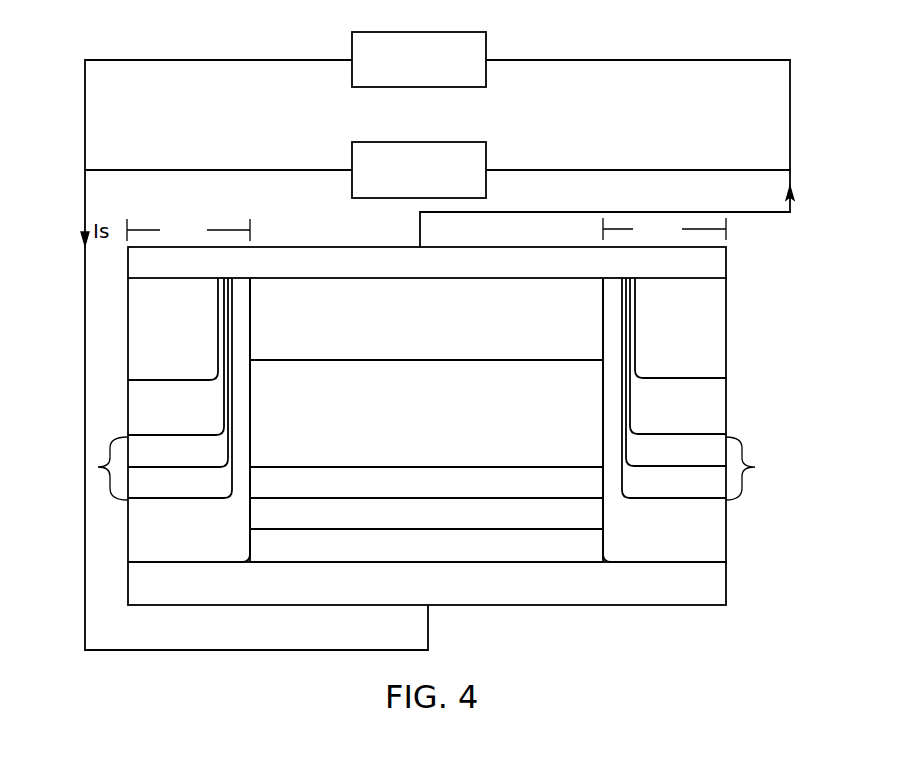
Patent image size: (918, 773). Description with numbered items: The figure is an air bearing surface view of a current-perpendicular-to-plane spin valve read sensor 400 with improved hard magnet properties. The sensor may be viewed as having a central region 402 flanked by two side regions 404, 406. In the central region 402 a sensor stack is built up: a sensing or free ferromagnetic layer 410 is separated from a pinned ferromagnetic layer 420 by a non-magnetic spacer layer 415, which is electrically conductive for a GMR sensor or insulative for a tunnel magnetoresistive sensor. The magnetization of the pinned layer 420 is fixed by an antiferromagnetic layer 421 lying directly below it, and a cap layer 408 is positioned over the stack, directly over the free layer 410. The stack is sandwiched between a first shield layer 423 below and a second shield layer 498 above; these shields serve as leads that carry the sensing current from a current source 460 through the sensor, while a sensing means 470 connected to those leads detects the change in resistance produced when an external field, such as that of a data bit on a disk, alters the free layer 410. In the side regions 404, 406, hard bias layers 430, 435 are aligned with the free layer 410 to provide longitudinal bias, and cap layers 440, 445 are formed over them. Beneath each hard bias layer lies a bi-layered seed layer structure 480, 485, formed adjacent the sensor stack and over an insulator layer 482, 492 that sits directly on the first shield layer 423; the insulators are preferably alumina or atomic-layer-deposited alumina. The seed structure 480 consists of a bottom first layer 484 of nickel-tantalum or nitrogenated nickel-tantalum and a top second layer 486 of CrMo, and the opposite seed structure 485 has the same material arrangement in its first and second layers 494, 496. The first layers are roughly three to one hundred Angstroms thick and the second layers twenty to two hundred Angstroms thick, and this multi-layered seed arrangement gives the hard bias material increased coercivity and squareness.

The spin valve sensor 400 is at (420, 473).
The central region 402 is at (393, 226).
The side region 404 is at (188, 230).
The side region 406 is at (664, 229).
The cap layer 408 is at (505, 353).
The sensing layer 410 is at (500, 425).
The spacer layer 415 is at (532, 492).
The pinned layer 420 is at (532, 523).
The antiferromagnetic layer 421 is at (509, 554).
The first shield layer 423 is at (540, 597).
The shield layer 498 is at (538, 273).
The hard bias layer 430 is at (137, 405).
The hard bias layer 435 is at (713, 413).
The cap layer 440 is at (157, 335).
The cap layer 445 is at (661, 333).
The current source 460 is at (486, 155).
The sensing means 470 is at (486, 47).
The multi-layered seed layer structure 480 is at (85, 461).
The insulator layer 482 is at (138, 552).
The first layer 484 is at (137, 500).
The second layer 486 is at (140, 446).
The multi-layered seed layer structure 485 is at (763, 468).
The insulator layer 492 is at (718, 550).
The first layer 494 is at (718, 500).
The second layer 496 is at (719, 448).